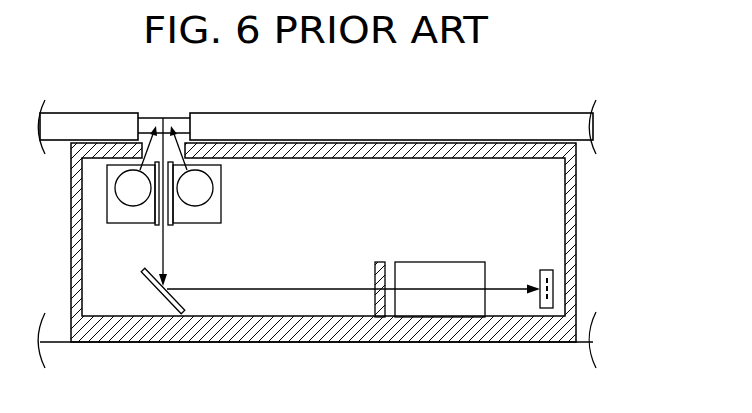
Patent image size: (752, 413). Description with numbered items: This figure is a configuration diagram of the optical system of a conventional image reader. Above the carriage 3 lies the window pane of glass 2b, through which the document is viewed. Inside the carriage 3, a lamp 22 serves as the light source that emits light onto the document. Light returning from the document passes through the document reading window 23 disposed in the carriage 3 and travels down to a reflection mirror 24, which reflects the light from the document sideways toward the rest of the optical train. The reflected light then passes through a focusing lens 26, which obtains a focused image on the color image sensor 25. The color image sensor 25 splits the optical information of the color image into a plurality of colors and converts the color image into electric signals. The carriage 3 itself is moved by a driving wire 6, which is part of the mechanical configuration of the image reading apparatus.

The window pane of glass 2b is at (172, 118).
The carriage 3 is at (72, 213).
The lamp 22 is at (213, 198).
The document reading window 23 is at (170, 225).
The reflection mirror 24 is at (166, 303).
The color image sensor 25 is at (545, 308).
The focusing lens 26 is at (432, 303).
The driving wire 6 is at (275, 343).